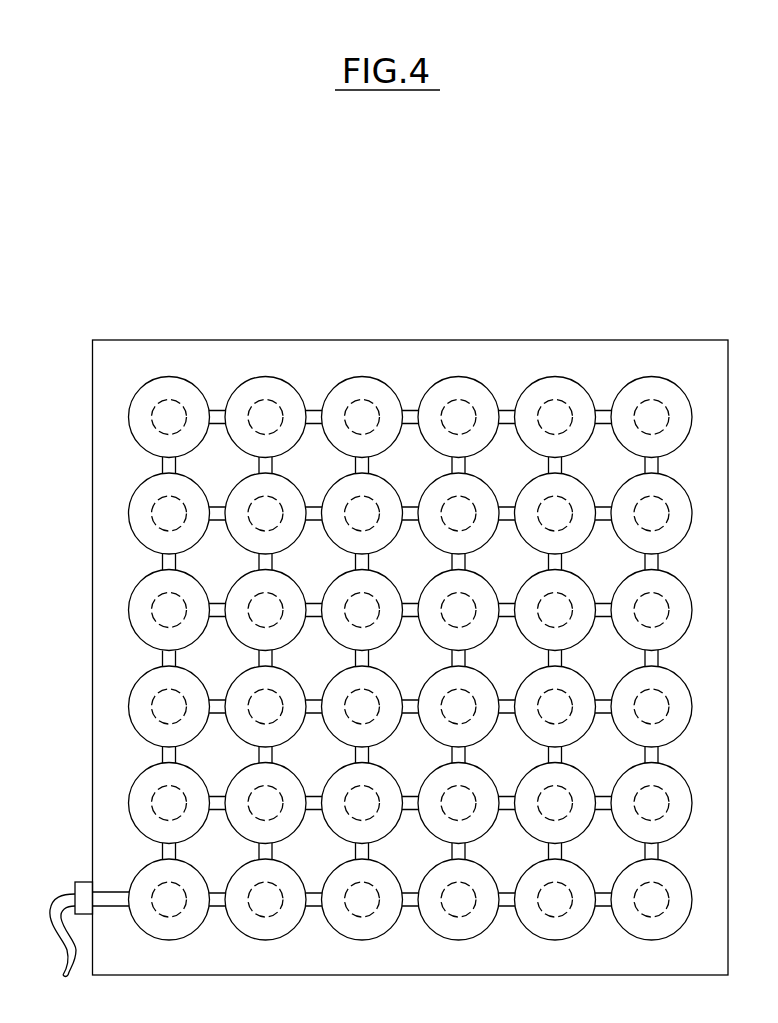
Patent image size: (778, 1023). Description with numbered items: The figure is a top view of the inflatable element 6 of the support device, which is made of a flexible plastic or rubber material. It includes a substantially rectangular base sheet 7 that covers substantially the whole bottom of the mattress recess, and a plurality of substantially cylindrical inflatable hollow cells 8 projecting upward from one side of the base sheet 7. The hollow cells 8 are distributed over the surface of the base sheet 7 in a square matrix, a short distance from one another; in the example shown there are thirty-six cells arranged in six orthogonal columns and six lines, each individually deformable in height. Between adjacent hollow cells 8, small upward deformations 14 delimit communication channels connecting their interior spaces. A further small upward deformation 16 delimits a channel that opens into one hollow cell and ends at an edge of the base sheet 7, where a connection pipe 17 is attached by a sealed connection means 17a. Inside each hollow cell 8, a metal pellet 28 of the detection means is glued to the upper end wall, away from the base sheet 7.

The inflatable element 6 is at (367, 657).
The base sheet 7 is at (251, 346).
The inflatable hollow cells 8 is at (377, 376).
The small upward deformations 14 is at (166, 657).
The small upward deformation 16 is at (110, 897).
The connection pipe 17 is at (65, 957).
The sealed connection means 17a is at (82, 891).
The metal pellets 28 is at (362, 917).